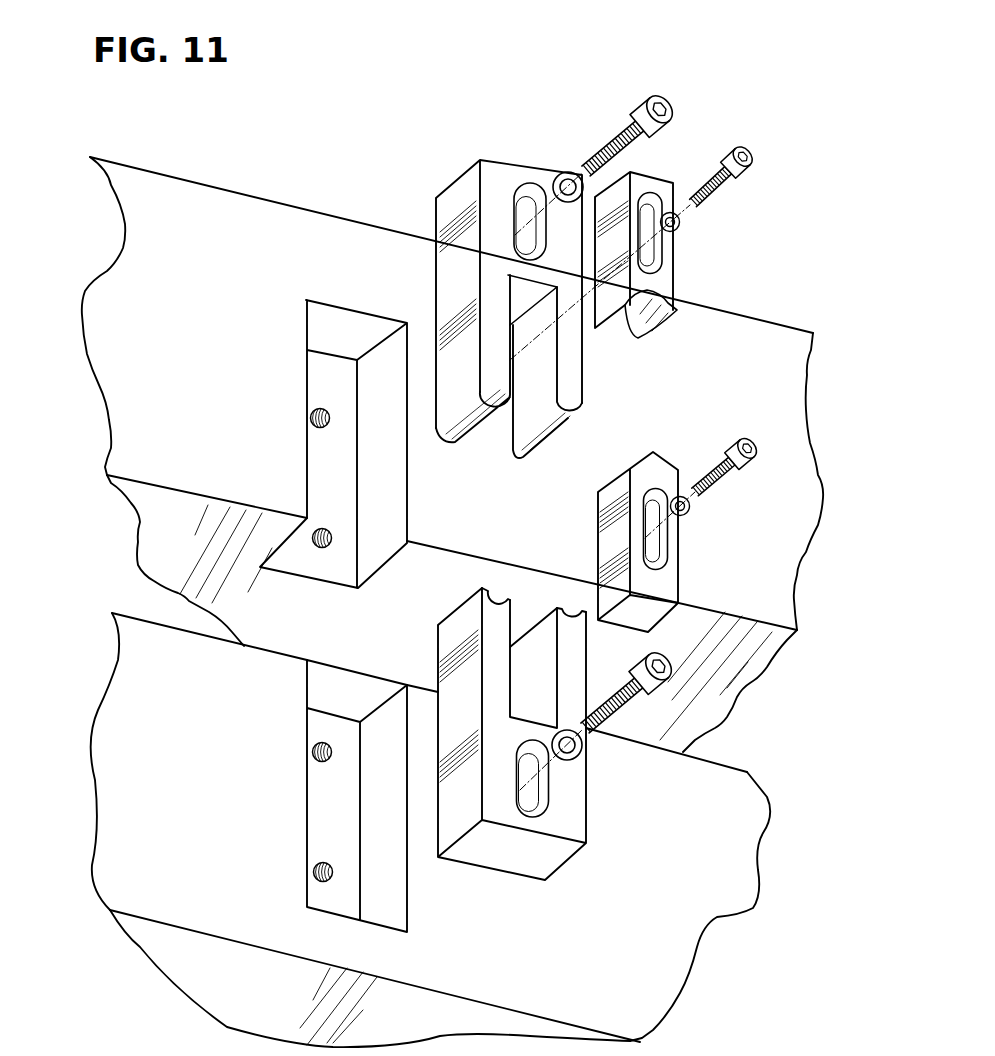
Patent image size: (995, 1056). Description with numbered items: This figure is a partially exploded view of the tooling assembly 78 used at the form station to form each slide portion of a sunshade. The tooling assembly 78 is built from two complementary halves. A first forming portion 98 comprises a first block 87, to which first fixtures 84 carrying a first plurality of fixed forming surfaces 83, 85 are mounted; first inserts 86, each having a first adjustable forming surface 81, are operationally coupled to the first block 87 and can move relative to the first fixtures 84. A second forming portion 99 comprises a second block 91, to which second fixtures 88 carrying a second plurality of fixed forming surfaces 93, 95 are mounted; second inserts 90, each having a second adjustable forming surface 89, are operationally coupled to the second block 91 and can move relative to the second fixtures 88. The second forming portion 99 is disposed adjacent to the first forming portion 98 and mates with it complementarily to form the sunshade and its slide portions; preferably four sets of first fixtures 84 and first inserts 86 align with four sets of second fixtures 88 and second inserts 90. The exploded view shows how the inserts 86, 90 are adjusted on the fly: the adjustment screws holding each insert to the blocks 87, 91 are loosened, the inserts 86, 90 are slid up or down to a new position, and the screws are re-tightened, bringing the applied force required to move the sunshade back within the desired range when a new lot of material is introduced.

The tooling assembly 78 is at (560, 294).
The first adjustable forming surface 81 is at (650, 516).
The fixed forming surface 83 is at (573, 618).
The first fixture 84 is at (557, 733).
The fixed forming surface 85 is at (495, 603).
The first insert 86 is at (603, 508).
The first block 87 is at (140, 698).
The second fixture 88 is at (473, 337).
The second adjustable forming surface 89 is at (643, 308).
The second insert 90 is at (673, 272).
The second block 91 is at (148, 230).
The fixed forming surface 93 is at (523, 445).
The fixed forming surface 95 is at (453, 433).
The first forming portion 98 is at (402, 830).
The second forming portion 99 is at (430, 454).